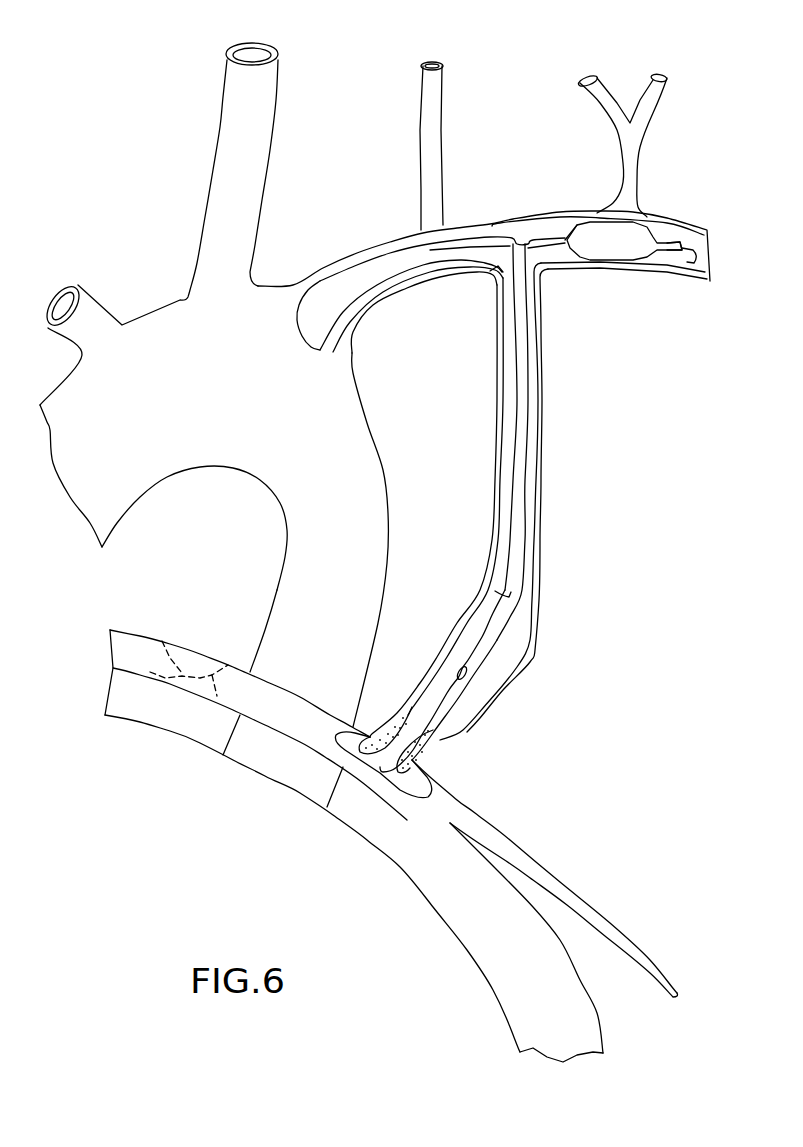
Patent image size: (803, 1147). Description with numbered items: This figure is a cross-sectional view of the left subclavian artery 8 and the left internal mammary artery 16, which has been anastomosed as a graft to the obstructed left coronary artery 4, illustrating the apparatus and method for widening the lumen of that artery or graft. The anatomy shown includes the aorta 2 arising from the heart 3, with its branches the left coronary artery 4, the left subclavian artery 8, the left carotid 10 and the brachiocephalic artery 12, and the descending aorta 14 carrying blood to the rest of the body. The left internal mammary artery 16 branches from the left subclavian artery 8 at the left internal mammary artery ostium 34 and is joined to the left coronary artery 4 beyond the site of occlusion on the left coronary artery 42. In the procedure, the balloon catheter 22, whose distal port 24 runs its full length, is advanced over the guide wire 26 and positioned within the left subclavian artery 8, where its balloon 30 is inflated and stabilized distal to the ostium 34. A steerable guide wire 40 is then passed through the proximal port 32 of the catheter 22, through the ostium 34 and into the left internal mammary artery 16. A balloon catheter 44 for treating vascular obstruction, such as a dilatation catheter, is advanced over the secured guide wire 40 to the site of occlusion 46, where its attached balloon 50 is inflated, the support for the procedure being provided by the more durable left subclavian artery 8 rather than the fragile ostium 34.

The aorta 2 is at (92, 451).
The heart 3 is at (270, 865).
The left coronary artery 4 is at (292, 726).
The left subclavian artery 8 is at (382, 246).
The left carotid 10 is at (240, 127).
The brachiocephalic artery 12 is at (95, 318).
The descending aorta 14 is at (343, 577).
The left internal mammary artery 16 is at (540, 487).
The balloon catheter 22 is at (567, 224).
The distal port 24 is at (682, 244).
The guide wire 26 is at (692, 263).
The balloon 30 is at (628, 246).
The proximal port 32 is at (515, 243).
The left internal mammary artery ostium 34 is at (491, 272).
The steerable guide wire 40 is at (446, 693).
The site of occlusion on the left coronary artery 42 is at (188, 650).
The balloon catheter for treating vascular obstruction 44 is at (500, 594).
The site of occlusion within the left internal mammary artery 46 is at (395, 733).
The balloon 50 is at (488, 638).